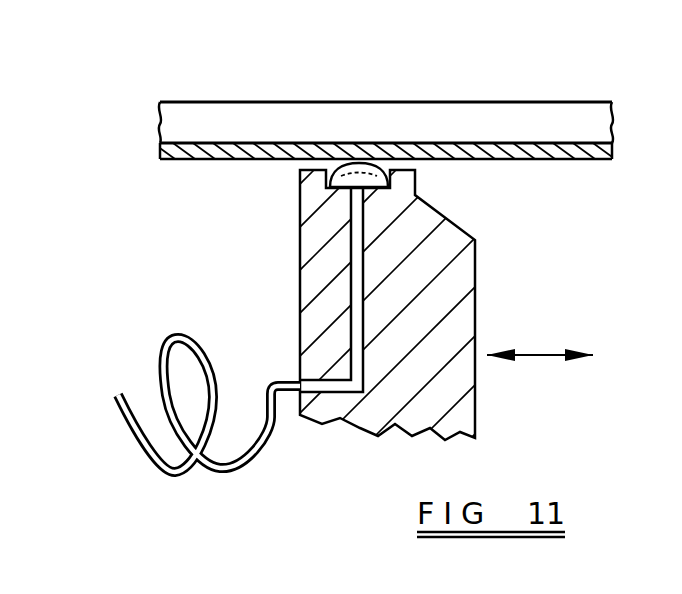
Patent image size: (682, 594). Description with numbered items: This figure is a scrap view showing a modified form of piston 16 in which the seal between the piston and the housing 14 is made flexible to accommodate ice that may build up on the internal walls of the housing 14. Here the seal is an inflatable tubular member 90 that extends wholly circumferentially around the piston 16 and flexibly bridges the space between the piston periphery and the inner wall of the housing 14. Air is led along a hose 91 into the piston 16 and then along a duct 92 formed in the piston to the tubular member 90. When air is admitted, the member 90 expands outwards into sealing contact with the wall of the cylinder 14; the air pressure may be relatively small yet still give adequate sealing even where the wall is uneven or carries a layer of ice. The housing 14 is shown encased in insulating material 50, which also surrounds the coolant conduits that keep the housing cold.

The insulating material 50 is at (518, 120).
The housing 14 is at (537, 162).
The piston 16 is at (284, 261).
The inflatable tubular member 90 is at (340, 163).
The duct 92 is at (351, 322).
The hose 91 is at (258, 437).